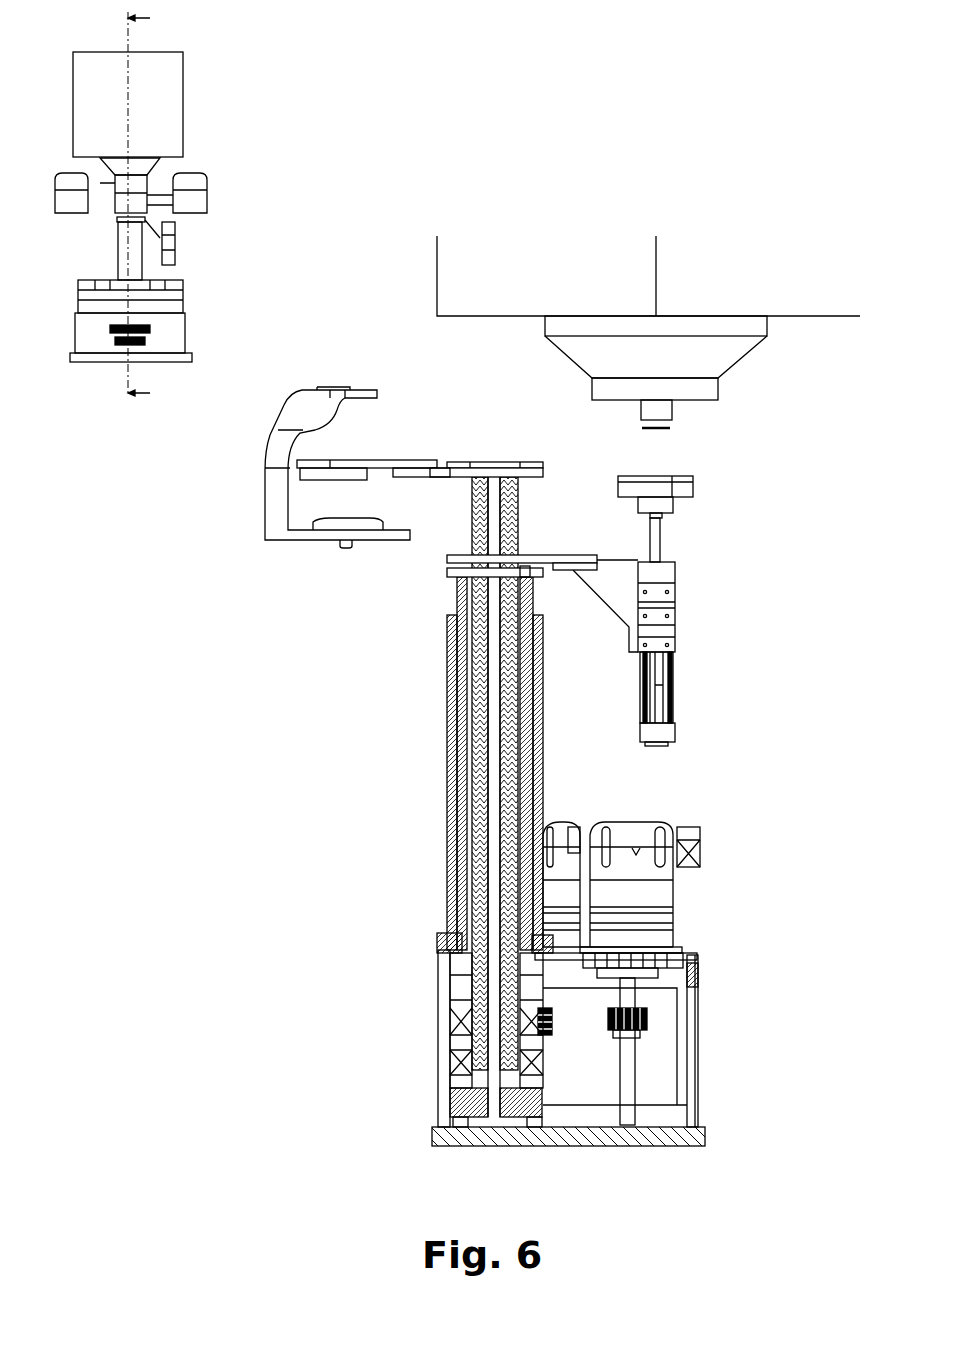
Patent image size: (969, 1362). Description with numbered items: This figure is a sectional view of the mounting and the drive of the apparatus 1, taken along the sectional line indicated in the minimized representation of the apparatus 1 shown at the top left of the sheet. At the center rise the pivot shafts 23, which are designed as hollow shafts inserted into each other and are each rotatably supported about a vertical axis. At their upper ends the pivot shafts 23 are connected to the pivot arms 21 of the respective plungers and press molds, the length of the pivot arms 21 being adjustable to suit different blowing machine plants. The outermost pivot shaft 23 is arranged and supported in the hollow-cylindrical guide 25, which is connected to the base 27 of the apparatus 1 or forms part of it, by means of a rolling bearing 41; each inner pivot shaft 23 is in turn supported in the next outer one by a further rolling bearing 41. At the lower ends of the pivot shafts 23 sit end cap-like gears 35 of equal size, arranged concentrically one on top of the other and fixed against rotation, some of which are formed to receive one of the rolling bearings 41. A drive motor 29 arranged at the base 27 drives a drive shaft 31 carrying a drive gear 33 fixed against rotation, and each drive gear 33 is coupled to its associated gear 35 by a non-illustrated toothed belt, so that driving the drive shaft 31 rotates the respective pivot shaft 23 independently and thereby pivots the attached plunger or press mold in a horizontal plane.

The apparatus 1 is at (193, 268).
The pivot arm 21 is at (403, 467).
The pivot shaft 23 is at (452, 697).
The hollow-cylindrical guide 25 is at (543, 773).
The base 27 is at (688, 955).
The drive motor 29 is at (643, 892).
The drive shaft 31 is at (647, 1147).
The drive gear 33 is at (645, 1022).
The gear 35 is at (445, 1097).
The rolling bearing 41 is at (450, 937).